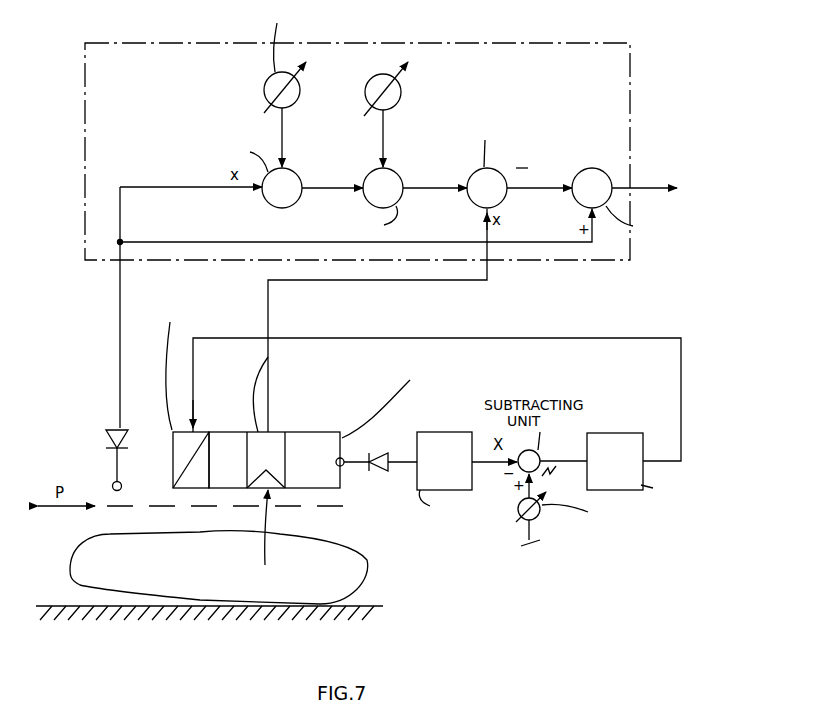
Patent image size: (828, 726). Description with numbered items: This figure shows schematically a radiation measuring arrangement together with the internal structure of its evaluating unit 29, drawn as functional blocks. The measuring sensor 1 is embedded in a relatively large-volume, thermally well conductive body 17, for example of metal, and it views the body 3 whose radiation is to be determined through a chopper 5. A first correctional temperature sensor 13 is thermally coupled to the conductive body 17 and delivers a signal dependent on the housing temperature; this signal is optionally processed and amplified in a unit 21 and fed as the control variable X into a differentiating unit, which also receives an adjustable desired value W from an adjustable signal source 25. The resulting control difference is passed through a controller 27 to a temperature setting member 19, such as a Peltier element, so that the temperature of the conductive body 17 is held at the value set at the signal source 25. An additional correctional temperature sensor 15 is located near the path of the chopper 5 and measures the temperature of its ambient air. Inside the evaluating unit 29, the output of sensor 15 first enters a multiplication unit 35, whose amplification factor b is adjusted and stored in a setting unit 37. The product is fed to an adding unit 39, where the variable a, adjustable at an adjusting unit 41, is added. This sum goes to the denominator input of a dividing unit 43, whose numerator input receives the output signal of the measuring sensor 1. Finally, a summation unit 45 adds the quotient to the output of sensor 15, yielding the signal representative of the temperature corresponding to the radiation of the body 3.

The measuring sensor 1 is at (271, 446).
The body 3 is at (352, 571).
The chopper 5 is at (338, 509).
The first correctional temperature sensor 13 is at (379, 472).
The additional correctional temperature sensor 15 is at (104, 438).
The thermally conductive body 17 is at (313, 444).
The temperature setting member 19 is at (173, 462).
The amplifying unit 21 is at (430, 432).
The adjustable signal source 25 is at (538, 517).
The controller 27 is at (610, 433).
The evaluating unit 29 is at (631, 76).
The multiplication unit 35 is at (270, 205).
The setting unit 37 is at (264, 85).
The adding unit 39 is at (398, 174).
The adjusting unit 41 is at (401, 92).
The dividing unit 43 is at (473, 205).
The summation unit 45 is at (613, 177).